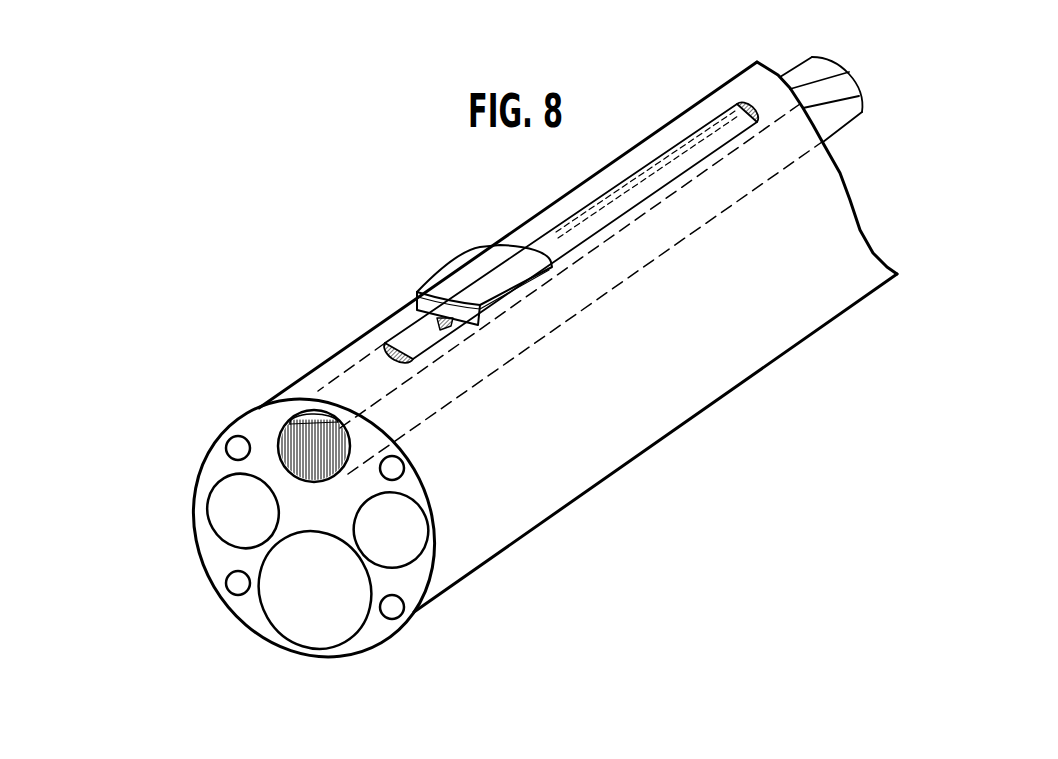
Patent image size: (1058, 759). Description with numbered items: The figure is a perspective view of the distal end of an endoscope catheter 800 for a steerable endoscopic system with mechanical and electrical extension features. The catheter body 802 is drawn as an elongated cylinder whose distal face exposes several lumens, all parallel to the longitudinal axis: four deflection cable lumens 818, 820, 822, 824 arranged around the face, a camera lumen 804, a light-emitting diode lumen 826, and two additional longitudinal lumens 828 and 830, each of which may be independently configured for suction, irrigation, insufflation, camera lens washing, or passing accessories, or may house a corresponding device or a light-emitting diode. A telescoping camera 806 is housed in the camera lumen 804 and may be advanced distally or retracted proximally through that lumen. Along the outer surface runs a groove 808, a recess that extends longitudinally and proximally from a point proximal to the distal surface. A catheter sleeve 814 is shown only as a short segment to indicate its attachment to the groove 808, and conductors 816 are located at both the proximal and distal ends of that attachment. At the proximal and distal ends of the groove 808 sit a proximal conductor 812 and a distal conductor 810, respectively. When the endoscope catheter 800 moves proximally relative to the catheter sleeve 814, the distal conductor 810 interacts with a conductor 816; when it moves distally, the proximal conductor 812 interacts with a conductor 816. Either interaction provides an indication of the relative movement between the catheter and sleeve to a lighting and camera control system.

The endoscope catheter 800 is at (876, 192).
The cylindrical body 802 is at (613, 410).
The camera lumen 804 is at (284, 424).
The telescoping camera 806 is at (327, 450).
The groove 808 is at (583, 212).
The distal conductor 810 is at (397, 350).
The proximal conductor 812 is at (758, 101).
The catheter sleeve 814 is at (488, 290).
The conductors 816 is at (428, 317).
The deflection cable lumen 818 is at (232, 447).
The deflection cable lumen 820 is at (233, 585).
The deflection cable lumen 822 is at (392, 468).
The deflection cable lumen 824 is at (393, 607).
The light-emitting diode lumen 826 is at (243, 514).
The additional longitudinal lumen 828 is at (323, 625).
The additional longitudinal lumen 830 is at (391, 518).